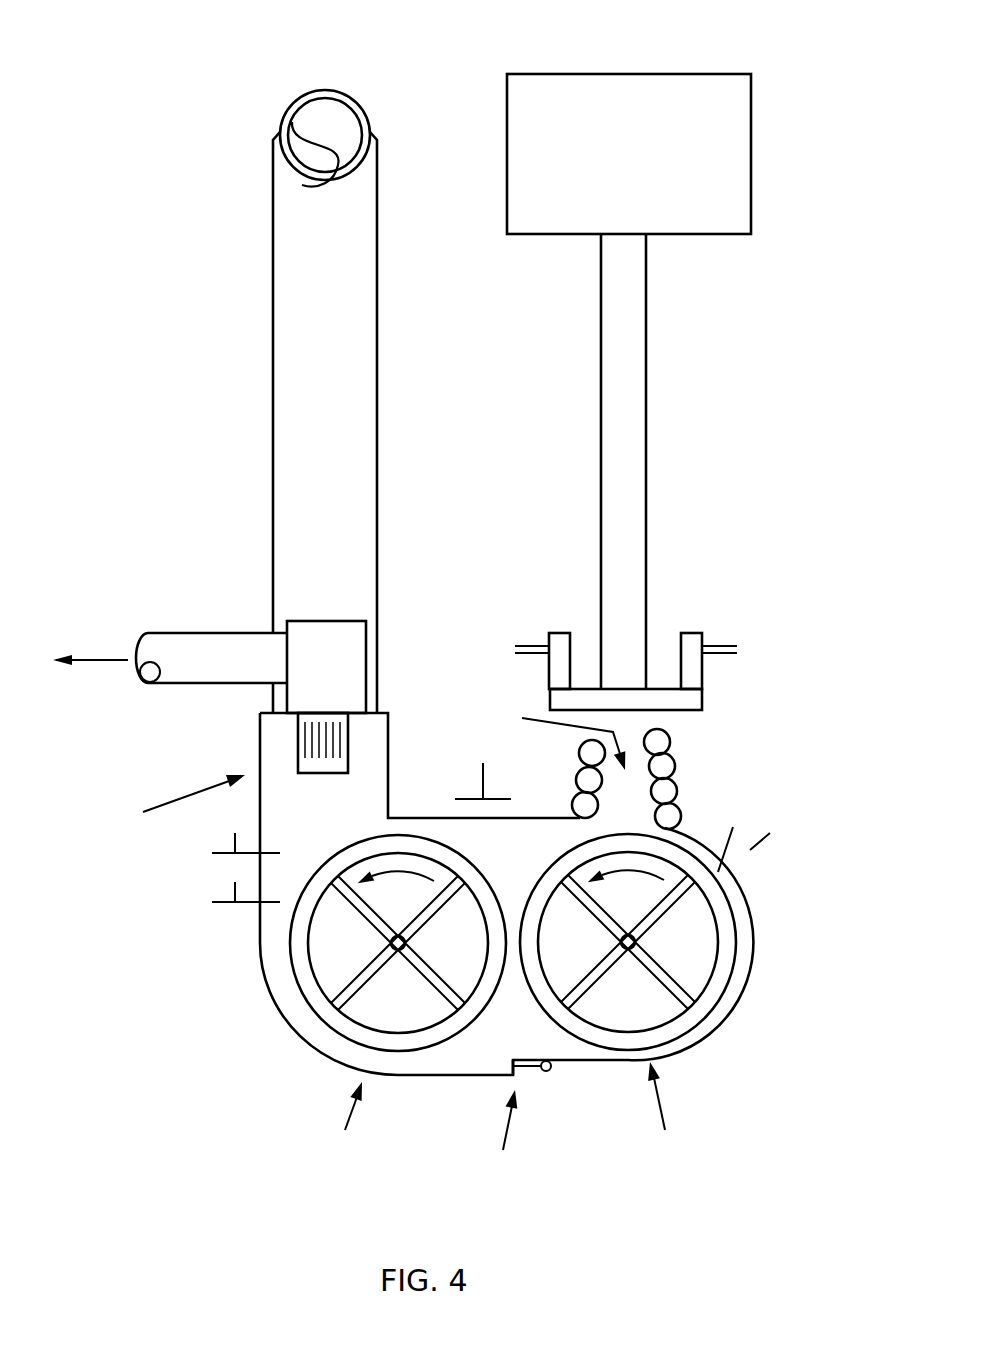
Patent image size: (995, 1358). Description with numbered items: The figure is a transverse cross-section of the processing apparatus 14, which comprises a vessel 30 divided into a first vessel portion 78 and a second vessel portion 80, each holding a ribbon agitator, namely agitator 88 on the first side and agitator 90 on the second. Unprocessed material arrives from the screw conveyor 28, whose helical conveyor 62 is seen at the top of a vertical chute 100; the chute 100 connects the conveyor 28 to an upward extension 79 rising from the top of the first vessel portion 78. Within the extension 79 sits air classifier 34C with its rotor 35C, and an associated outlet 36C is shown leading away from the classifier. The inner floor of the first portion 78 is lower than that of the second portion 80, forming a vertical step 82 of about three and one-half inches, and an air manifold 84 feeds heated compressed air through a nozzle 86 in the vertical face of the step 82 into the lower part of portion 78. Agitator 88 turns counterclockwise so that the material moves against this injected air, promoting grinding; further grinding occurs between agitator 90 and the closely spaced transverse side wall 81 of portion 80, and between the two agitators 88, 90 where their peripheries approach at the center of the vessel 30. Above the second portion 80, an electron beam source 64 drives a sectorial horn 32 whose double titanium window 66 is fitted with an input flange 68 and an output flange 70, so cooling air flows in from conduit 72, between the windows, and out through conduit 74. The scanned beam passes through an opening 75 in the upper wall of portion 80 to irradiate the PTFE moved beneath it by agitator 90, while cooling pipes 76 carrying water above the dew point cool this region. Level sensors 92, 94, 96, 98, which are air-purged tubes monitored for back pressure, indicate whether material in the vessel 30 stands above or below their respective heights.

The processing apparatus 14 is at (898, 716).
The screw conveyor 28 is at (318, 92).
The vessel 30 is at (265, 987).
The sectorial horn 32 is at (647, 425).
The air classifier 34C is at (366, 658).
The rotor 35C is at (298, 735).
The outlet pipe 36C is at (192, 632).
The helical conveyor 62 is at (292, 128).
The electron beam source 64 is at (752, 155).
The window 66 is at (703, 698).
The input flange 68 is at (564, 619).
The output flange 70 is at (683, 619).
The conduit 72 is at (530, 643).
The conduit 74 is at (722, 643).
The opening 75 is at (552, 734).
The cooling pipes 76 is at (671, 790).
The first vessel portion 78 is at (336, 1123).
The upward extension 79 is at (171, 802).
The second vessel portion 80 is at (674, 1113).
The transverse side wall 81 is at (747, 940).
The vertical step 82 is at (495, 1137).
The air manifold 84 is at (550, 1071).
The nozzle 86 is at (461, 1103).
The ribbon agitator 88 is at (315, 974).
The ribbon agitator 90 is at (710, 970).
The level sensor 92 is at (200, 922).
The level sensor 94 is at (200, 870).
The level sensor 96 is at (483, 782).
The level sensor 98 is at (763, 840).
The vertical chute 100 is at (272, 395).